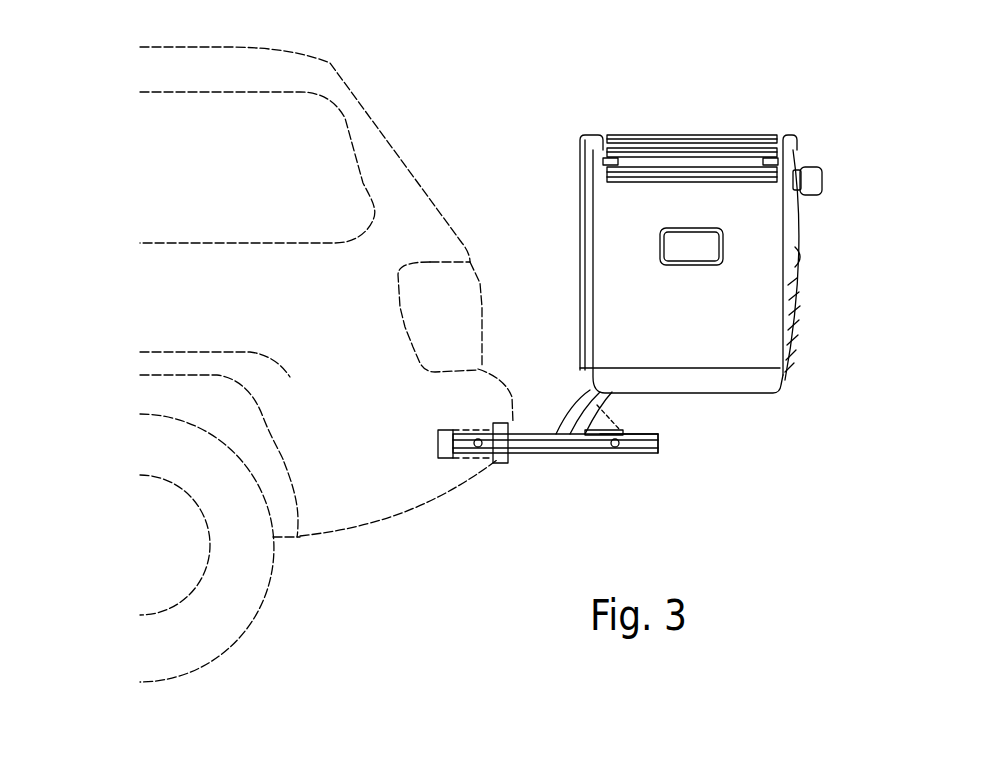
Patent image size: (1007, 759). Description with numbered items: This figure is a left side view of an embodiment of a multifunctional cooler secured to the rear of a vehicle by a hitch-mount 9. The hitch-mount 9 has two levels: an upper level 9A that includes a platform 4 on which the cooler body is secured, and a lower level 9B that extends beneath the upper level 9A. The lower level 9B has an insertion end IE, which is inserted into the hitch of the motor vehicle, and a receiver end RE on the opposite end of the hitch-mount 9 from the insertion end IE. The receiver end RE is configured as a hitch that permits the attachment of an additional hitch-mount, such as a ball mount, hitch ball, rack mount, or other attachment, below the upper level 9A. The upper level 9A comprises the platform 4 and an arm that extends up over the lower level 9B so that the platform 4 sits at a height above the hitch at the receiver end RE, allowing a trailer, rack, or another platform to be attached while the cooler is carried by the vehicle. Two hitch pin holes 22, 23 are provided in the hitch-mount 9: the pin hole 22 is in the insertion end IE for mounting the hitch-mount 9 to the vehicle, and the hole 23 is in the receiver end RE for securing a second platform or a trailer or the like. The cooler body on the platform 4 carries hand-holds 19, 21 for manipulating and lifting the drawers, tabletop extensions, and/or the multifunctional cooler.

The platform 4 is at (770, 383).
The hand-hold 19 is at (822, 173).
The hand-hold 21 is at (660, 243).
The hitch-mount 9 is at (567, 457).
The upper level 9A is at (592, 390).
The lower level 9B is at (658, 433).
The hitch pin hole 22 is at (480, 447).
The hitch pin hole 23 is at (617, 447).
The insertion end IE is at (452, 458).
The receiver end RE is at (658, 451).